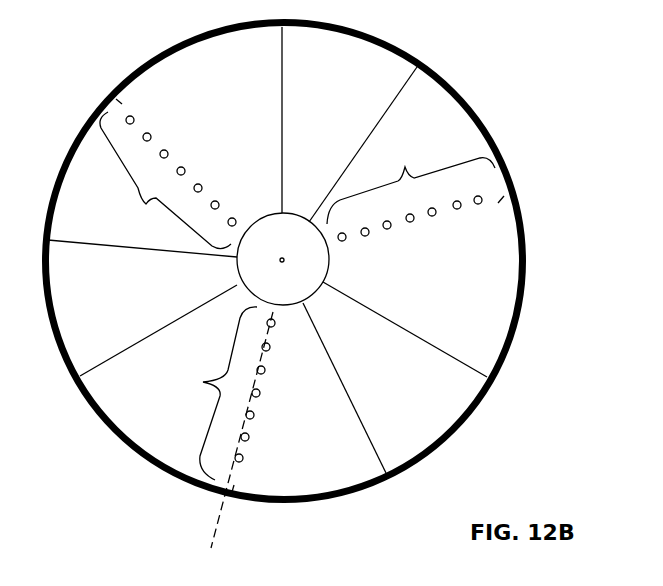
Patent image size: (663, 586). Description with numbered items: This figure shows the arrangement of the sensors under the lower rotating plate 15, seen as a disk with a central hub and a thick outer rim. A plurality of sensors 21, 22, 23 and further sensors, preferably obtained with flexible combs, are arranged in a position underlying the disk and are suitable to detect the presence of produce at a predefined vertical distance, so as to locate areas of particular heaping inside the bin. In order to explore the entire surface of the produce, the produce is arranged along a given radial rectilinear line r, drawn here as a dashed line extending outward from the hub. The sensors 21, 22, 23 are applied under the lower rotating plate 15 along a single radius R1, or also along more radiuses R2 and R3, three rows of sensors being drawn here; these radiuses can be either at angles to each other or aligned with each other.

The lower rotating plate 15 is at (479, 115).
The sensor 21 is at (501, 206).
The sensor 22 is at (475, 208).
The sensor 23 is at (453, 210).
The single radius R1 is at (215, 393).
The radius R2 is at (411, 182).
The radius R3 is at (165, 180).
The radial rectilinear line r is at (223, 430).